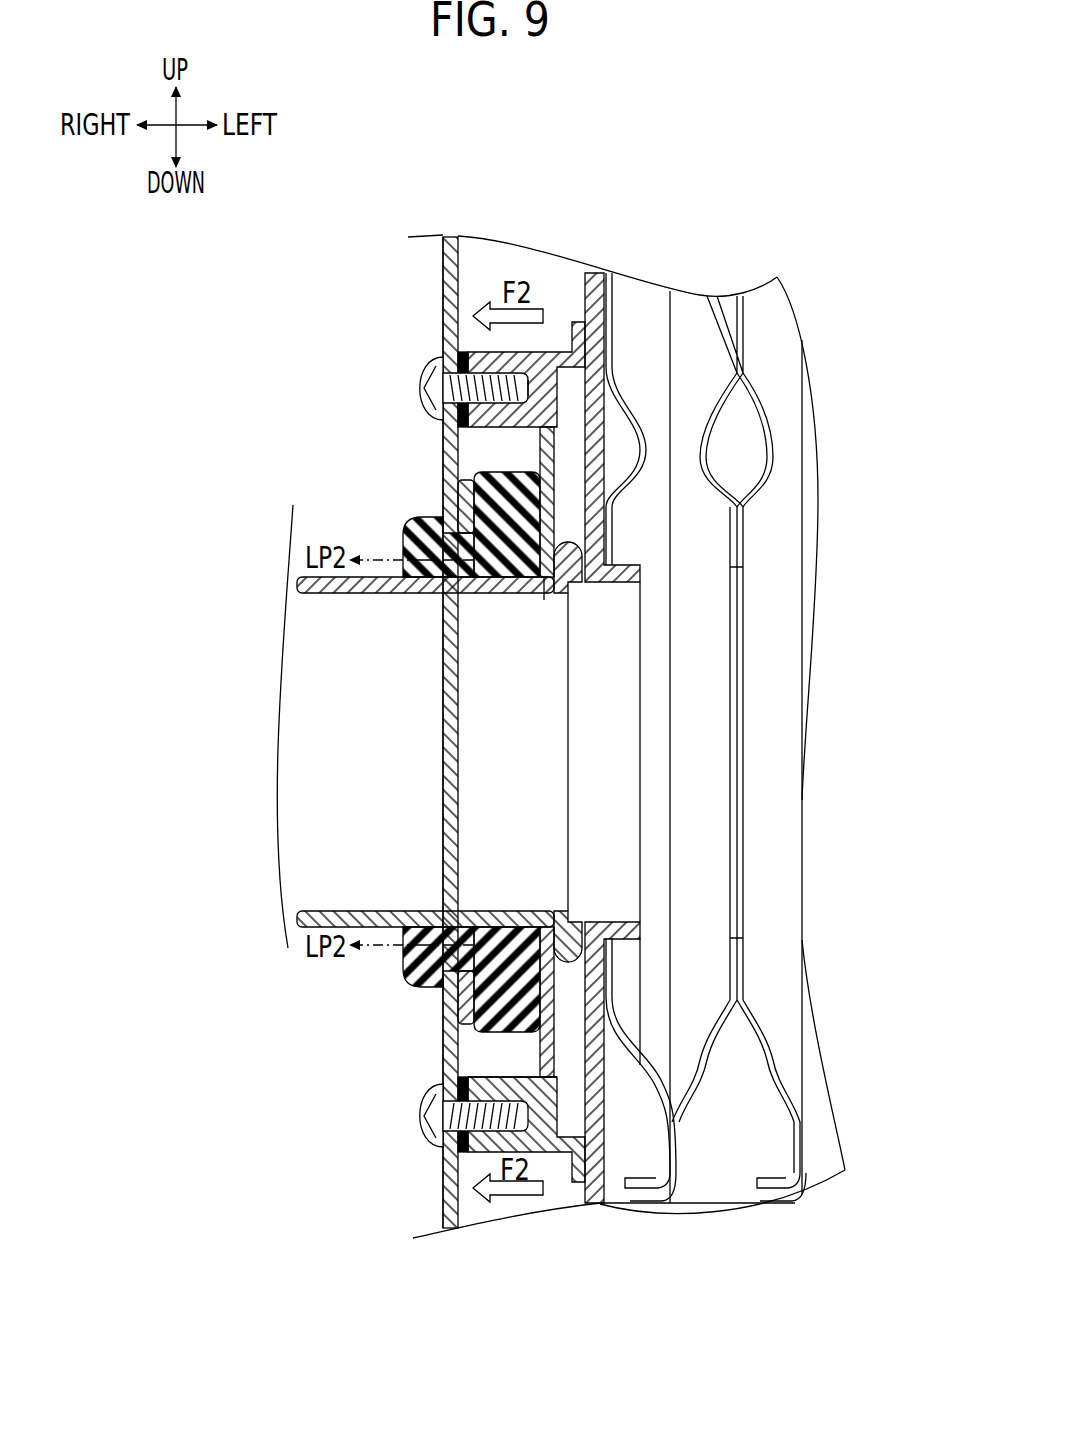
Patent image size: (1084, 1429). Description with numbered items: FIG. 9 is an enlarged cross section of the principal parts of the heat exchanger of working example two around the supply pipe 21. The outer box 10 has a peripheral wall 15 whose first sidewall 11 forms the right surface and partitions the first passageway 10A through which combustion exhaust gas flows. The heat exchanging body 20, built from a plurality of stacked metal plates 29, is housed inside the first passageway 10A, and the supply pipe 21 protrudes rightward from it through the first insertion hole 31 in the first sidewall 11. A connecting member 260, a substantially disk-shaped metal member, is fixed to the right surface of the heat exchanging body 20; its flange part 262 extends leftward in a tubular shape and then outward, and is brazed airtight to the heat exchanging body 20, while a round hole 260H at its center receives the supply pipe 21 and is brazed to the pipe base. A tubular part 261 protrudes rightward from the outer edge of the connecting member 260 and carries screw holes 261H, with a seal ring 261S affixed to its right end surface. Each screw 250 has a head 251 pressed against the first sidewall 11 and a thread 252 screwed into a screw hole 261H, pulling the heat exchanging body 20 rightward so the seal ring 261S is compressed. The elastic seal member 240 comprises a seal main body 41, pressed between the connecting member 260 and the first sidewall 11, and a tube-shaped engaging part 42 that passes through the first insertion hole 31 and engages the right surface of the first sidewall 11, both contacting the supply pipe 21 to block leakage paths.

The outer box 10 is at (435, 262).
The first passageway 10A is at (510, 263).
The first sidewall 11 is at (455, 237).
The peripheral wall 15 is at (442, 302).
The heat exchanging body 20 is at (803, 330).
The supply pipe 21 is at (302, 728).
The metal plates 29 is at (595, 293).
The first insertion hole 31 is at (413, 537).
The seal main body 41 is at (553, 490).
The engaging part 42 is at (413, 977).
The elastic seal member 240 is at (397, 965).
The screw 250 is at (418, 398).
The head 251 is at (447, 357).
The thread 252 is at (515, 393).
The connecting member 260 is at (557, 1158).
The round hole 260H is at (548, 585).
The tubular part 261 is at (493, 1147).
The screw holes 261H is at (457, 420).
The seal ring 261S is at (458, 1063).
The flange part 262 is at (576, 1185).